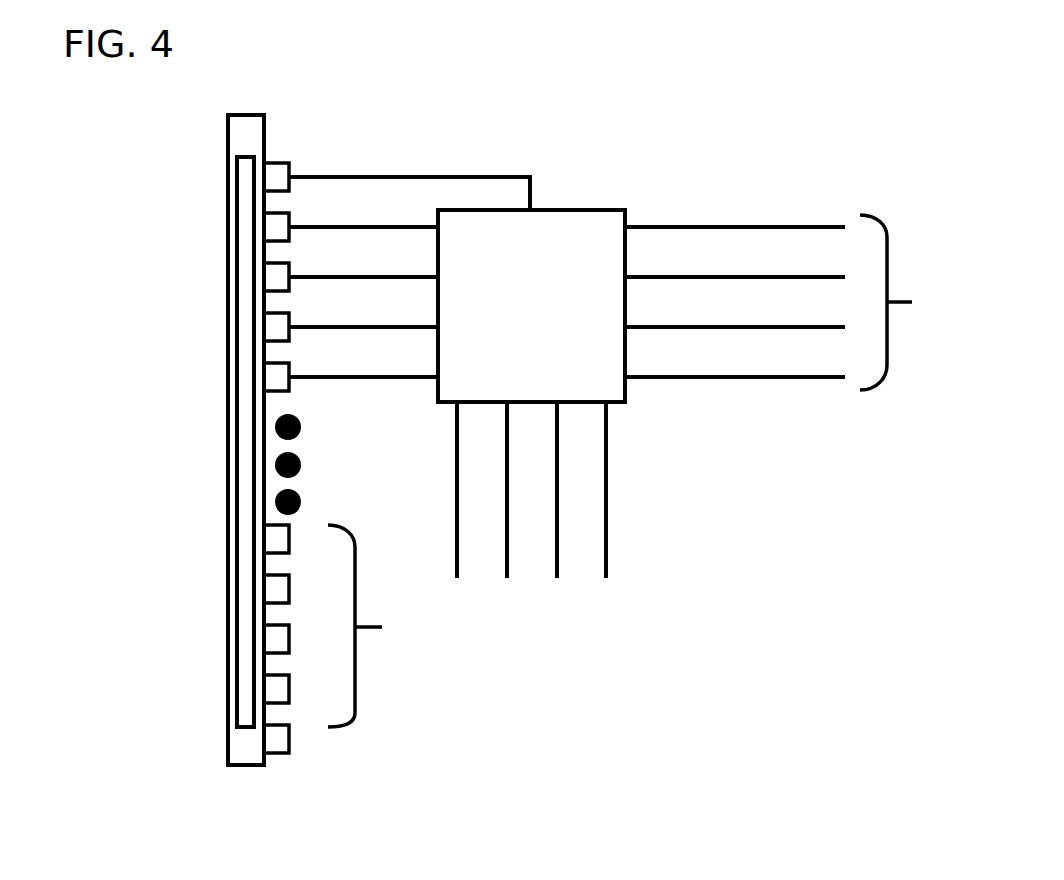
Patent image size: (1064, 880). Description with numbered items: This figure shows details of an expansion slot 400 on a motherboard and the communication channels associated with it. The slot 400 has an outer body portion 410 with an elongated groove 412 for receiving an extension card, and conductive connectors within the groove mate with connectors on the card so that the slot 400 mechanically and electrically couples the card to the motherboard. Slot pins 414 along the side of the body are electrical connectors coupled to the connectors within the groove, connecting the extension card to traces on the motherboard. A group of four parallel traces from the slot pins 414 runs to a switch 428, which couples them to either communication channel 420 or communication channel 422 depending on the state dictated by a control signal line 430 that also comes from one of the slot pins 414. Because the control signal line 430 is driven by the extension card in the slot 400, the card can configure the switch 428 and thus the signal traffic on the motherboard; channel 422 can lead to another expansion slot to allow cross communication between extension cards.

The slot 400 is at (329, 445).
The outer body portion 410 is at (228, 483).
The elongated groove 412 is at (237, 648).
The slot pins 414 is at (363, 400).
The communication channel 420 is at (623, 540).
The communication channel 422 is at (712, 388).
The switch 428 is at (600, 212).
The control signal line 430 is at (460, 176).